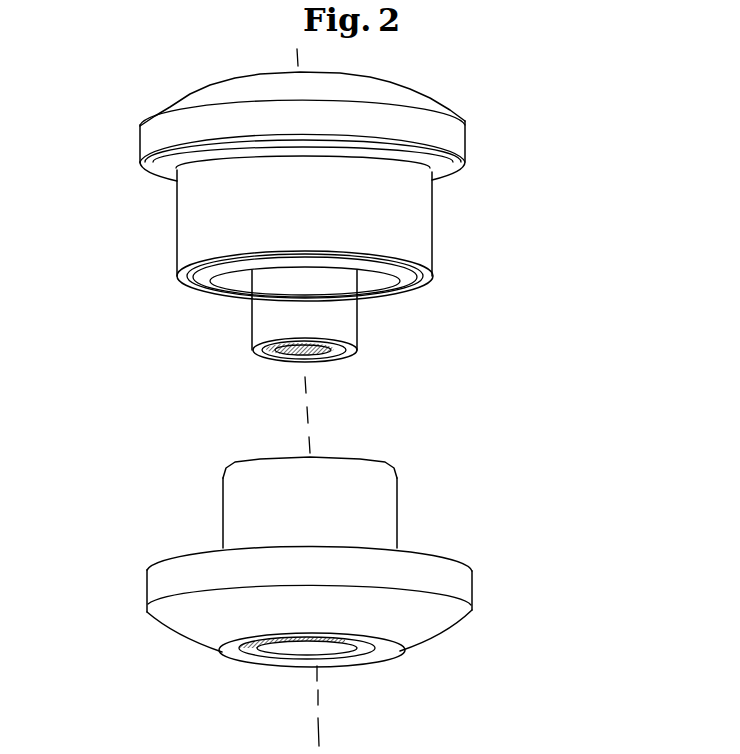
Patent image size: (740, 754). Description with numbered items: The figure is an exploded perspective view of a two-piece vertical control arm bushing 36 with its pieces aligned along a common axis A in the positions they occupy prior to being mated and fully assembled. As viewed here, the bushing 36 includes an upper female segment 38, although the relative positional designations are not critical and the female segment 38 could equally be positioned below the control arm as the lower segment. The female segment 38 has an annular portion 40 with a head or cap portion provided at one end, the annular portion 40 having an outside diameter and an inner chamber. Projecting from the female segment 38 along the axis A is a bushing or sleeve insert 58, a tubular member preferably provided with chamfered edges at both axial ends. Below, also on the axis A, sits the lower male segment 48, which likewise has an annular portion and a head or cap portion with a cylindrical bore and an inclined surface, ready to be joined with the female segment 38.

The vertical control arm bushing 36 is at (580, 168).
The upper female segment 38 is at (181, 103).
The annular portion 40 is at (432, 267).
The bushing or sleeve insert 58 is at (251, 328).
The lower male segment 48 is at (458, 553).
The central axis A is at (323, 728).